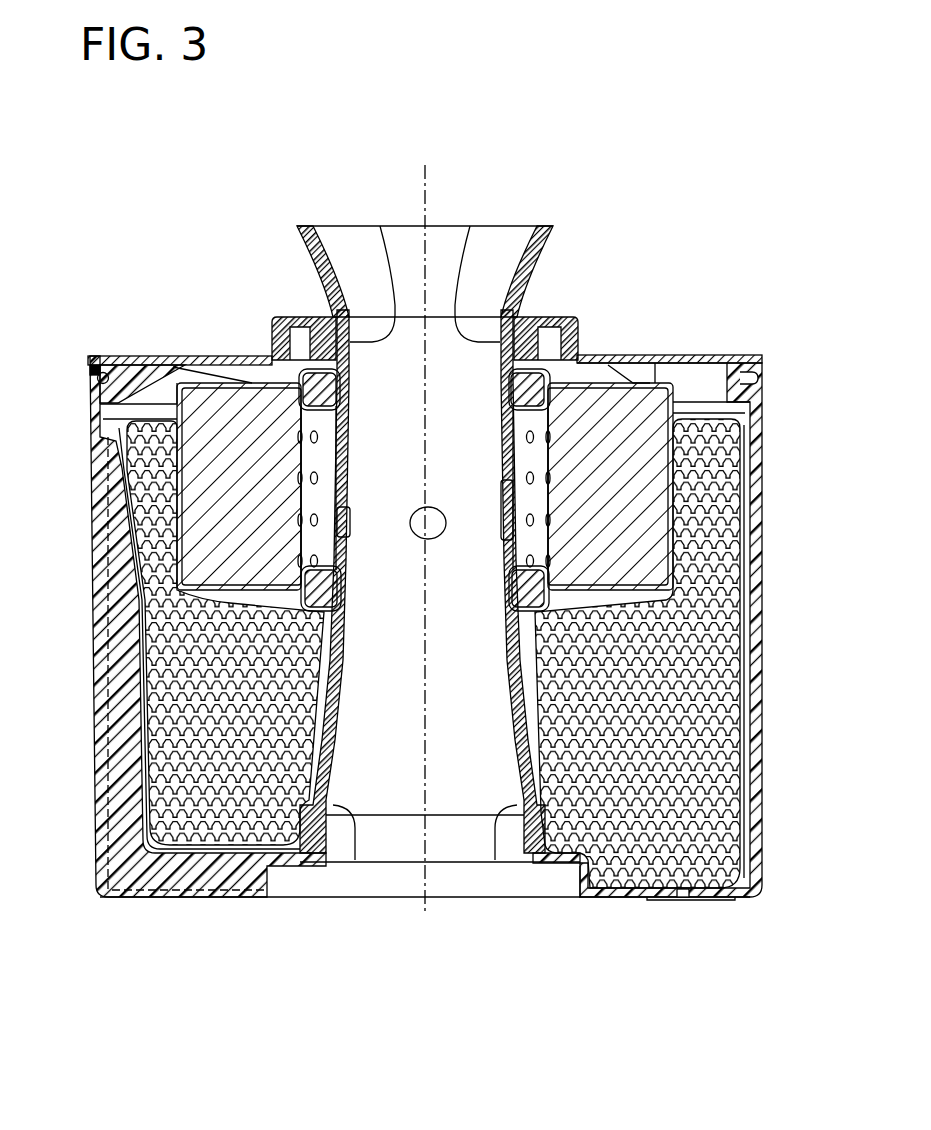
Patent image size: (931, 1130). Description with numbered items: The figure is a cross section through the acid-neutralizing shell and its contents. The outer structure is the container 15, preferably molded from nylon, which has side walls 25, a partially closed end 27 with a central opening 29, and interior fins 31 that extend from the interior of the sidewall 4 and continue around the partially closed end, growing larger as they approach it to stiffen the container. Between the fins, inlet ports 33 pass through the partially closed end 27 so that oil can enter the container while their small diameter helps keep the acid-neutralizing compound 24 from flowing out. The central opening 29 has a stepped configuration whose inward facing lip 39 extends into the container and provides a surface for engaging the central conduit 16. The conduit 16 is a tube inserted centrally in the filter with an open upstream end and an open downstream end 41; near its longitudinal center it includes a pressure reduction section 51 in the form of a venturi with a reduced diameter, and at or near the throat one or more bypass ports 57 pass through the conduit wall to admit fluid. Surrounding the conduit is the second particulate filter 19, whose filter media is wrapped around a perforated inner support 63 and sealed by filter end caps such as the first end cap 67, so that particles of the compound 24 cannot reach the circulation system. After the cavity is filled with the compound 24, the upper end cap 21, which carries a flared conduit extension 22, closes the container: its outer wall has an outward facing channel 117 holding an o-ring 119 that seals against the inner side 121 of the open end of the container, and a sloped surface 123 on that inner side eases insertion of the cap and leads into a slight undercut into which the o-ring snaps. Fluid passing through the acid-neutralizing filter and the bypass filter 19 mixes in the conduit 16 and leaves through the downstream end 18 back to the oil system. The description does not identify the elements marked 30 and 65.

The sidewall 4 is at (91, 500).
The container 15 is at (762, 586).
The central conduit 16 is at (511, 690).
The downstream end 18 is at (458, 320).
The second particulate filter 19 is at (618, 428).
The upper end cap 21 is at (165, 356).
The flared conduit extension 22 is at (305, 226).
The acid-neutralizing compound 24 is at (700, 752).
The side walls 25 is at (95, 662).
The partially closed end 27 is at (180, 897).
The central opening 29 is at (566, 897).
The top plate 30 is at (680, 355).
The interior fins 31 is at (122, 800).
The inlet ports 33 is at (686, 897).
The inward facing lip 39 is at (388, 317).
The downstream end 41 is at (503, 895).
The pressure reduction section 51 is at (501, 499).
The bypass port 57 is at (350, 522).
The perforated inner support 63 is at (323, 461).
The spring 65 is at (220, 382).
The first end cap 67 is at (222, 606).
The outward facing channel 117 is at (130, 356).
The o-ring 119 is at (99, 382).
The inner side 121 is at (762, 373).
The sloped surface 123 is at (97, 368).